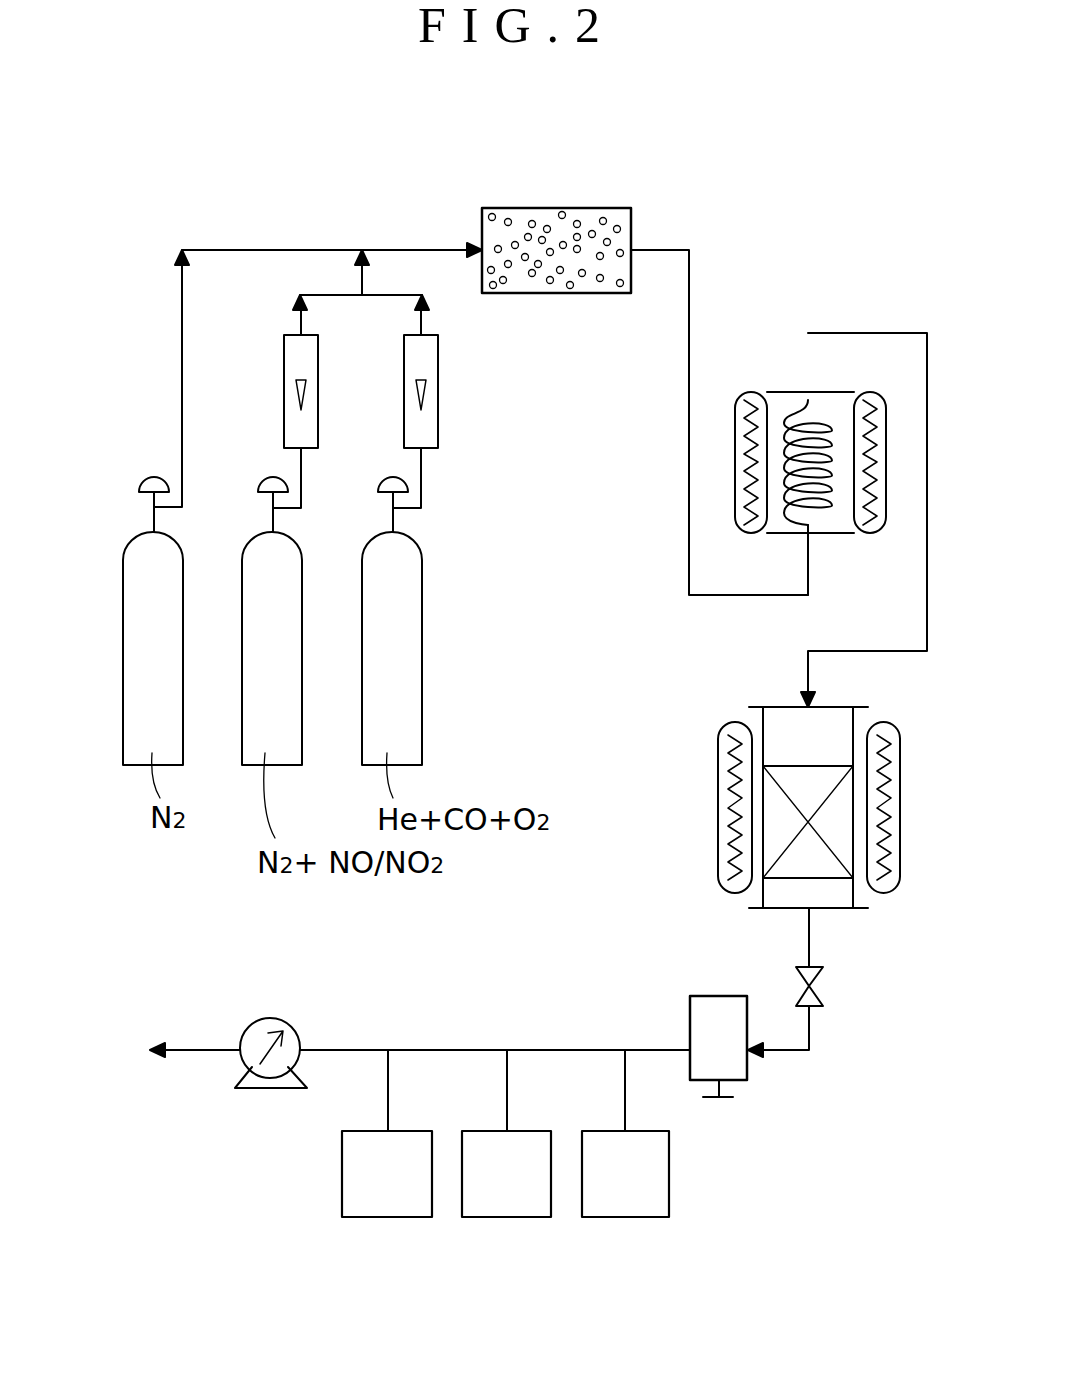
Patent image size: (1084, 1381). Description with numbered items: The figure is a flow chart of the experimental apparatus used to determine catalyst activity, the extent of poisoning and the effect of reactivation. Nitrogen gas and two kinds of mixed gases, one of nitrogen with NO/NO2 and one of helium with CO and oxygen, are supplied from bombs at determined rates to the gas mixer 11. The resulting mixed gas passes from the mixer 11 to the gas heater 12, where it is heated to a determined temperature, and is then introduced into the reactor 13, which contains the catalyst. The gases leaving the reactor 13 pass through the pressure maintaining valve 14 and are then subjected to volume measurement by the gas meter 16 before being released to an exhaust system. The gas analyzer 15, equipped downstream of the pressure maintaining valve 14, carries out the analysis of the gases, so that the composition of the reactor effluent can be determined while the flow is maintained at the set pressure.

The gas mixer 11 is at (562, 208).
The gas heater 12 is at (777, 392).
The reactor 13 is at (783, 707).
The pressure maintaining valve 14 is at (720, 996).
The gas analyzer 15 is at (628, 1232).
The gas meter 16 is at (295, 1025).